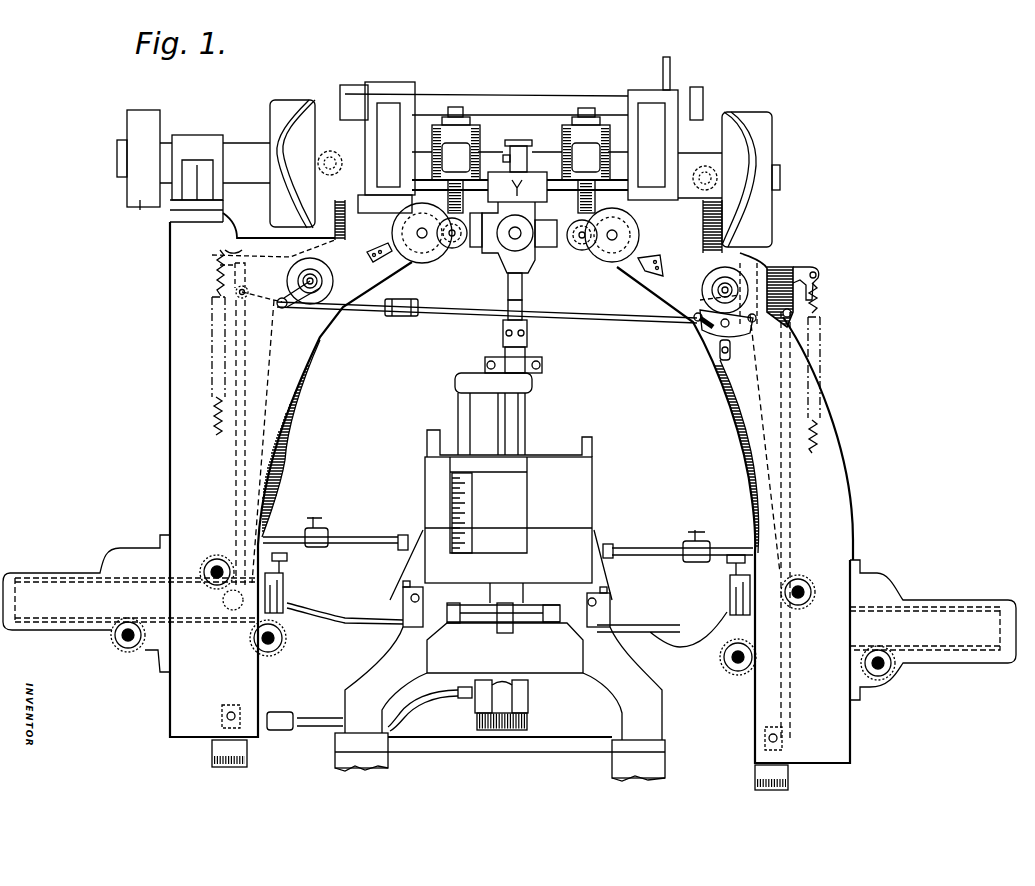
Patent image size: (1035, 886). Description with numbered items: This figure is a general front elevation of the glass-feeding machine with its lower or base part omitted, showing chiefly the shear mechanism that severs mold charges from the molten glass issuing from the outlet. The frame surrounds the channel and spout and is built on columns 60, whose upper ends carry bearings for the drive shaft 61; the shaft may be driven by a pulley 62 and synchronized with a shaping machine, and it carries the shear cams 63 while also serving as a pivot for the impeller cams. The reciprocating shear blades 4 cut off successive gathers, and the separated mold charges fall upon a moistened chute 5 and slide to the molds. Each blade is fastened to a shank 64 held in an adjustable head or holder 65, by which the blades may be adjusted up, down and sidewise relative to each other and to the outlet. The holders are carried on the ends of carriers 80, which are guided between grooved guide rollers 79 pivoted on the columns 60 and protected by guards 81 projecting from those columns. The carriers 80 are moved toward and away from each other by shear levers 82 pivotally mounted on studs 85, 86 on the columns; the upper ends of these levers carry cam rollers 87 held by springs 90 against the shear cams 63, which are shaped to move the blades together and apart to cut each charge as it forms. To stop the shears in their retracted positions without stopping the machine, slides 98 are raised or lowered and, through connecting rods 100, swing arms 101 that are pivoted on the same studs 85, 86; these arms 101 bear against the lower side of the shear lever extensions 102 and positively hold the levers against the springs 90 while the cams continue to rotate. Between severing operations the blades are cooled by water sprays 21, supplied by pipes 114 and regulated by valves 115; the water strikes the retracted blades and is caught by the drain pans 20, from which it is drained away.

The shear blades 4 is at (412, 626).
The moistened chute 5 is at (532, 720).
The drain pans 20 is at (318, 651).
The water sprays 21 is at (401, 538).
The columns 60 is at (183, 417).
The drive shaft 61 is at (117, 156).
The pulley 62 is at (150, 107).
The shear cams 63 is at (278, 113).
The shanks 64 is at (320, 615).
The adjustable heads or holders 65 is at (286, 590).
The grooved guide rollers 79 is at (121, 649).
The carriers 80 is at (39, 583).
The guards 81 is at (10, 627).
The shear levers 82 is at (290, 456).
The stud 85 is at (312, 281).
The stud 86 is at (712, 288).
The cam rollers 87 is at (323, 160).
The springs 90 is at (218, 278).
The slides 98 is at (224, 727).
The connecting rods 100 is at (236, 458).
The arms 101 is at (257, 262).
The shear lever extensions 102 is at (225, 250).
The pipes 114 is at (346, 537).
The valves 115 is at (313, 527).